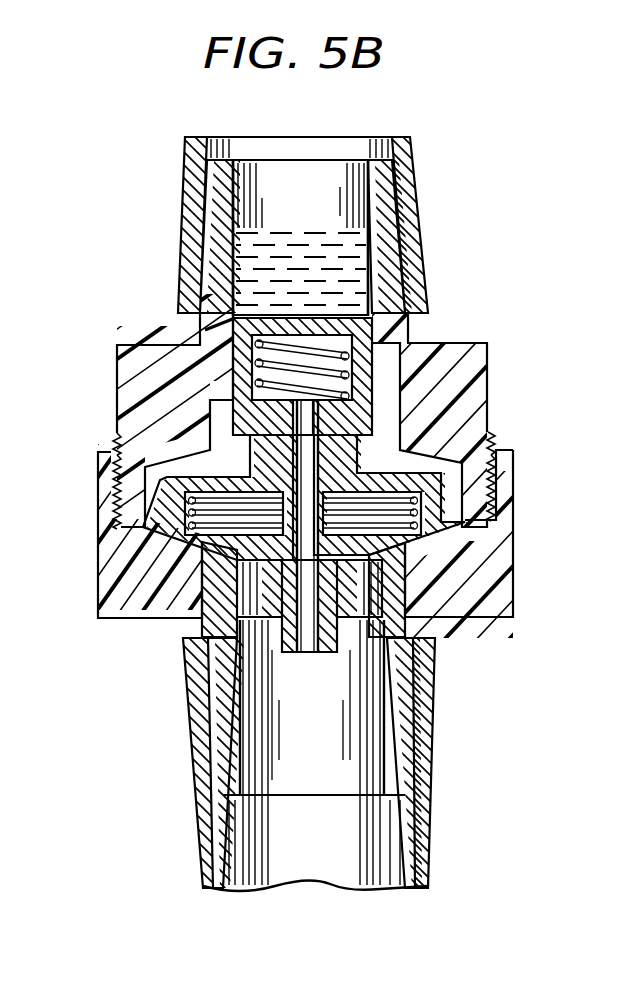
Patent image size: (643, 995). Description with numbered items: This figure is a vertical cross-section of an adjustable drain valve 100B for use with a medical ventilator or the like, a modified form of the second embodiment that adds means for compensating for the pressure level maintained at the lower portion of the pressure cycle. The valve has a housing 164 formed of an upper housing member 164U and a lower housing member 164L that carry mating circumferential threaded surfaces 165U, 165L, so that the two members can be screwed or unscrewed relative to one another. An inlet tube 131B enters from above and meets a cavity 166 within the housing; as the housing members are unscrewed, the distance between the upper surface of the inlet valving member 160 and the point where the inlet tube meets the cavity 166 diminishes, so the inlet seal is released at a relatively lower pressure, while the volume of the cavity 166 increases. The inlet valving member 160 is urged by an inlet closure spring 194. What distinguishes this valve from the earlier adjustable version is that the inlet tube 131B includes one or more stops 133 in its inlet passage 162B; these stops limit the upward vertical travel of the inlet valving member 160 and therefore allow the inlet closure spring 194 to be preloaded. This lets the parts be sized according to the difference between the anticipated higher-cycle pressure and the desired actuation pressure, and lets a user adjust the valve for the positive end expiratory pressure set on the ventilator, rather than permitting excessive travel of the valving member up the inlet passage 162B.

The adjustable drain valve 100B is at (560, 324).
The inlet tube 131B is at (205, 216).
The inlet passage 162B is at (313, 186).
The stop 133 is at (240, 316).
The inlet valving member 160 is at (258, 315).
The inlet closure spring 194 is at (314, 346).
The cavity 166 is at (429, 452).
The housing 164 is at (104, 421).
The upper housing member 164U is at (140, 352).
The lower housing member 164L is at (110, 589).
The threaded surface 165U is at (496, 437).
The threaded surface 165L is at (496, 489).